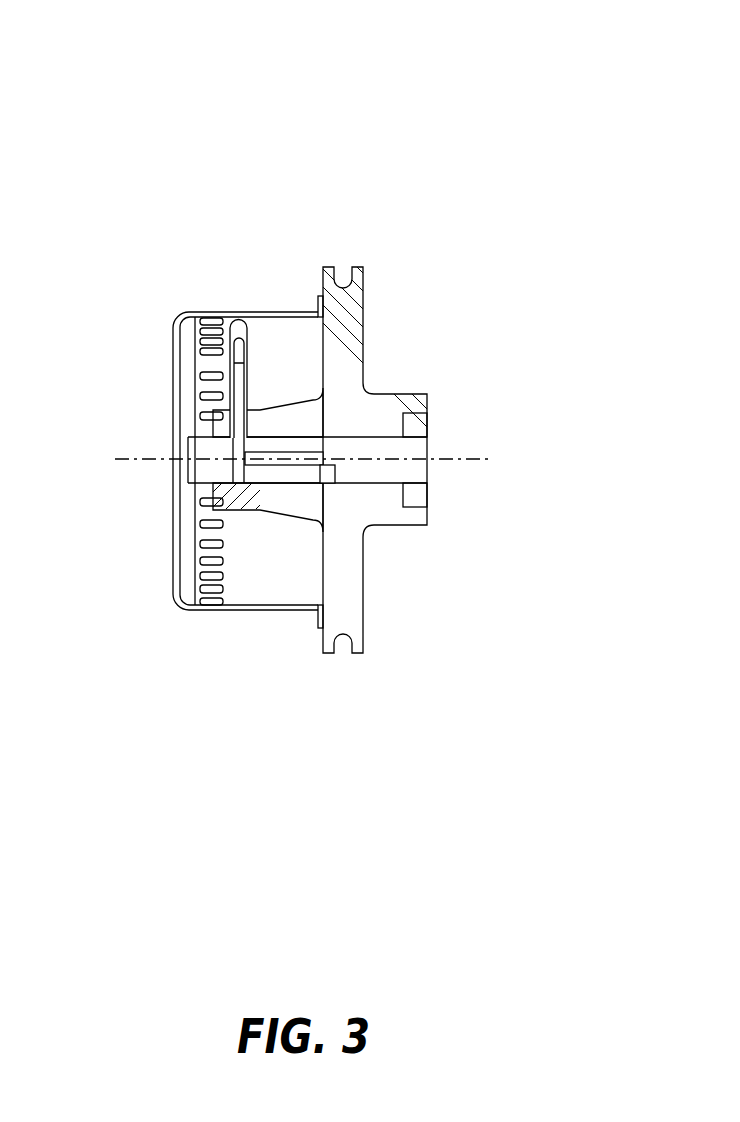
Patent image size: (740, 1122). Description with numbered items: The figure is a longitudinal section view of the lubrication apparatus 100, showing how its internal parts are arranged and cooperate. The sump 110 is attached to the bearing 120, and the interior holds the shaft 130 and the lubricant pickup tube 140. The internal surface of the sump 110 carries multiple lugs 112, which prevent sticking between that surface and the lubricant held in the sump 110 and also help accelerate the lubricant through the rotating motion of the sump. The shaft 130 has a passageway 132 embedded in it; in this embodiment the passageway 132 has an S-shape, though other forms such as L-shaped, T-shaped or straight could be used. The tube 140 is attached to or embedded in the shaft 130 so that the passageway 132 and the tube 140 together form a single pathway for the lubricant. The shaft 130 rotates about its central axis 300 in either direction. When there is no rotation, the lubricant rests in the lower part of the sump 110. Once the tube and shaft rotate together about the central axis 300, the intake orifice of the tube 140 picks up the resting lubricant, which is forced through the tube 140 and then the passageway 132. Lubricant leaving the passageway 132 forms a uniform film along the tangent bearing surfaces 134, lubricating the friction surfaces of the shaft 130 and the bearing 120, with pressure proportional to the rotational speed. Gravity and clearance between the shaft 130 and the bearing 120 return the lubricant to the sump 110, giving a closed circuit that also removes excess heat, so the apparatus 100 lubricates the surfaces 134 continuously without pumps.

The lubrication apparatus 100 is at (621, 61).
The sump 110 is at (216, 309).
The lugs 112 is at (212, 549).
The bearing 120 is at (367, 595).
The shaft 130 is at (429, 452).
The passageway 132 is at (261, 459).
The bearing surfaces 134 is at (386, 491).
The lubricant pickup tube 140 is at (227, 349).
The central axis 300 is at (453, 461).